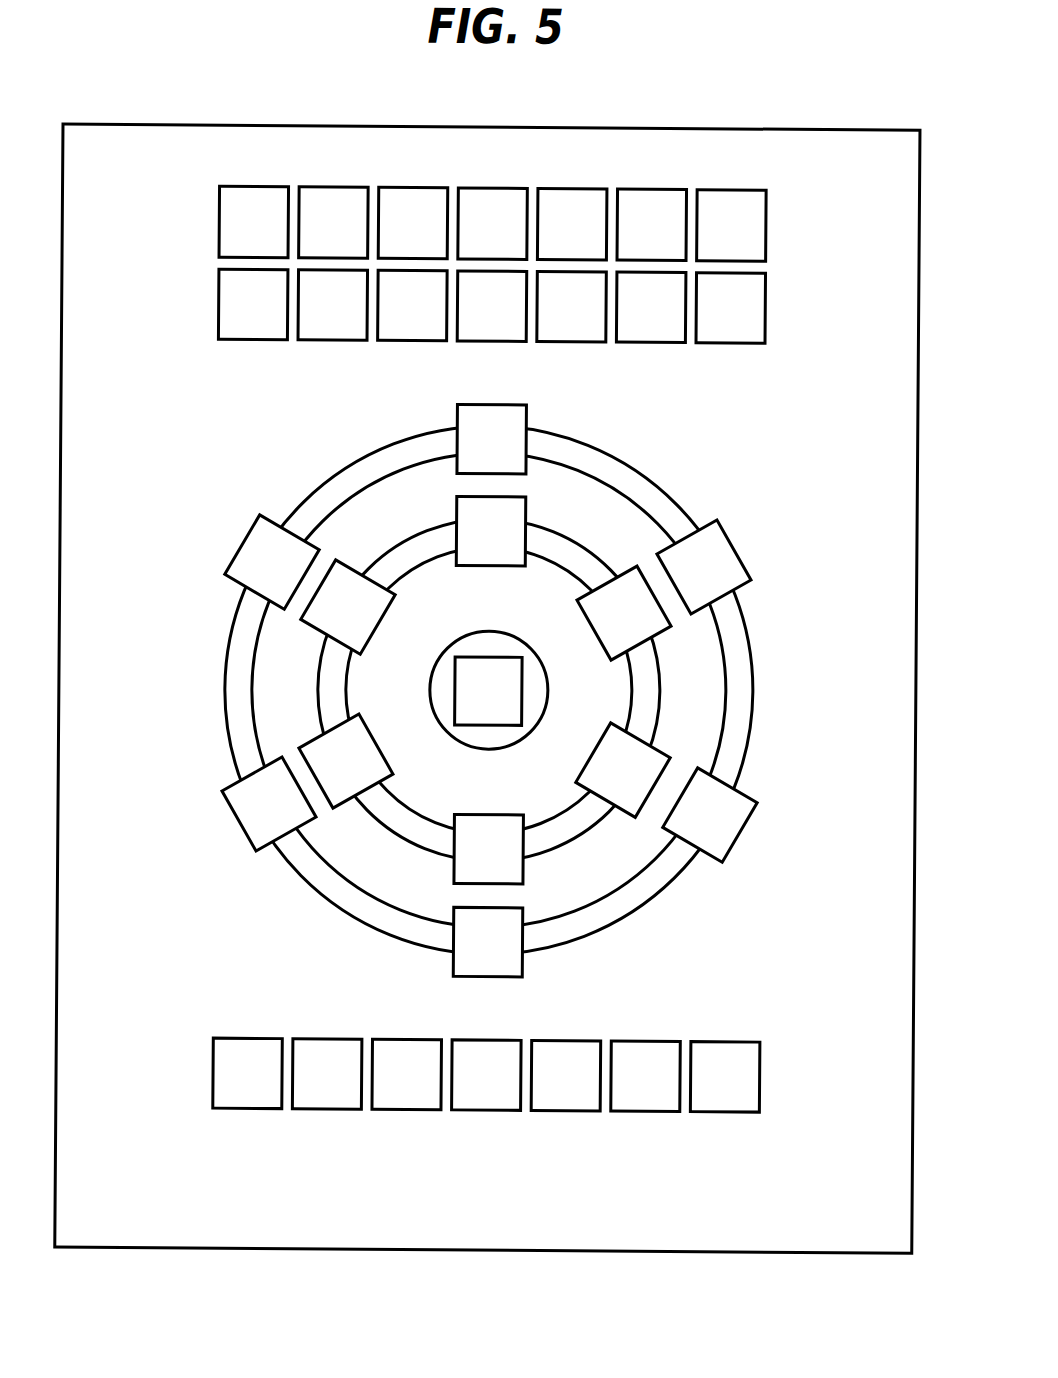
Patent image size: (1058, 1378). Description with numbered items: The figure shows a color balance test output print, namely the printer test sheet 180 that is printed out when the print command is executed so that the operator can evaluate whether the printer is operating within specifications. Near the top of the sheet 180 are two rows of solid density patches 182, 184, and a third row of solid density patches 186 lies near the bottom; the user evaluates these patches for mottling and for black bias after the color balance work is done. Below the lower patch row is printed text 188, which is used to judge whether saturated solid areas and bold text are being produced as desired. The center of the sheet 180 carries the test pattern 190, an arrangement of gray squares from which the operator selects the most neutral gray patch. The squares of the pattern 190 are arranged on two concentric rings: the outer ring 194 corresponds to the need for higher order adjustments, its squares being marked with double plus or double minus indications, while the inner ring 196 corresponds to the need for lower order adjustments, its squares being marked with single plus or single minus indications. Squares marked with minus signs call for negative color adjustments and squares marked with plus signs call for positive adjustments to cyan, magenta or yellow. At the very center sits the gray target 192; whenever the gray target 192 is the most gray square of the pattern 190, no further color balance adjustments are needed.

The printer test sheet 180 is at (750, 88).
The solid density patch 182 is at (253, 184).
The solid density patch 184 is at (254, 339).
The solid density patch 186 is at (254, 1036).
The printed text 188 is at (780, 1120).
The test pattern 190 is at (760, 430).
The gray target 192 is at (505, 724).
The outer ring 194 is at (644, 881).
The inner ring 196 is at (585, 816).